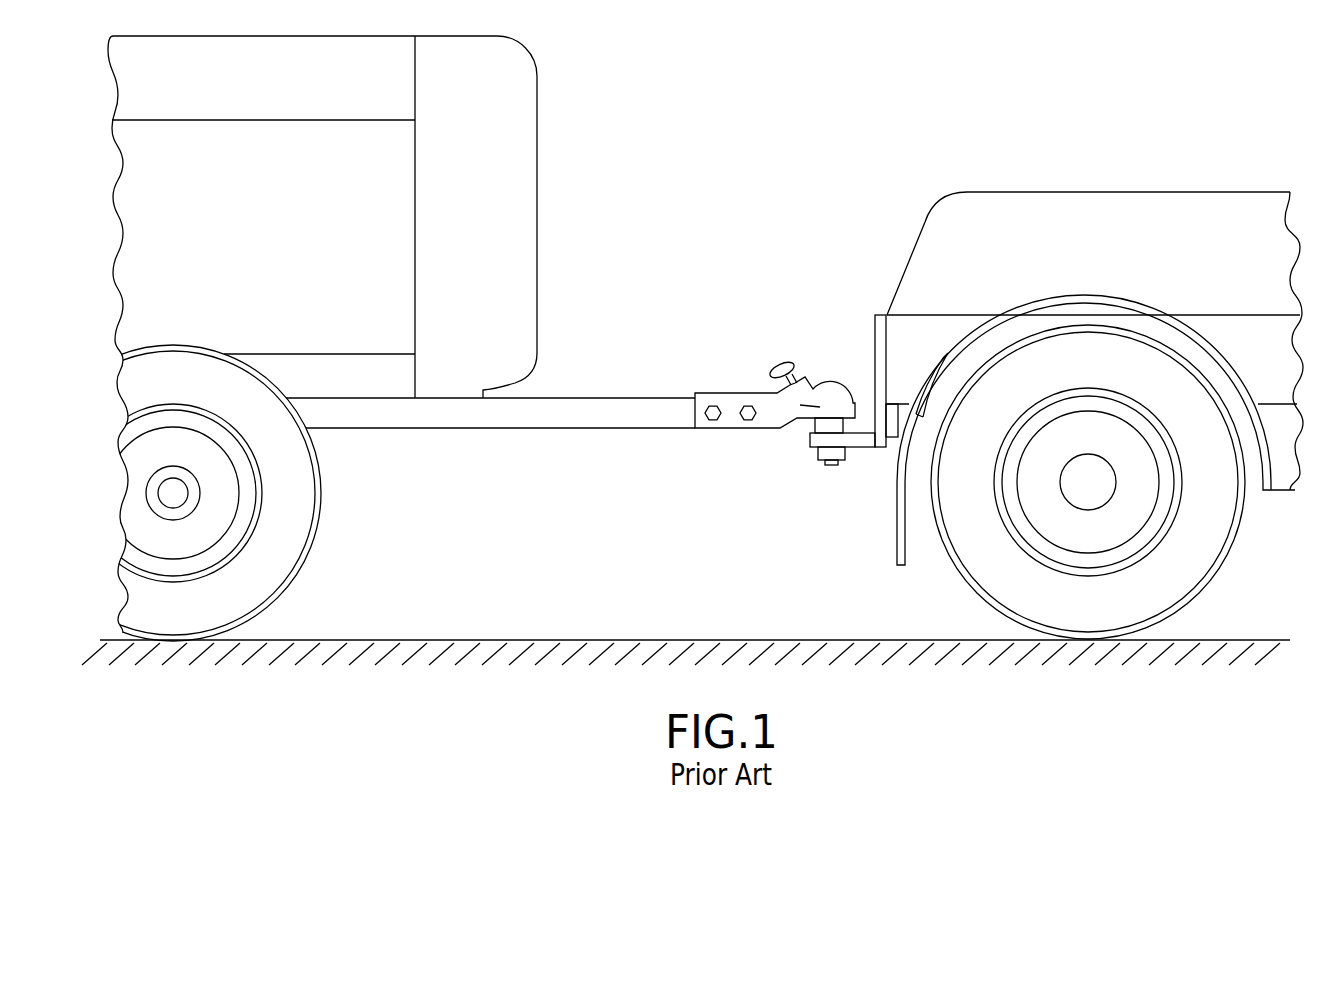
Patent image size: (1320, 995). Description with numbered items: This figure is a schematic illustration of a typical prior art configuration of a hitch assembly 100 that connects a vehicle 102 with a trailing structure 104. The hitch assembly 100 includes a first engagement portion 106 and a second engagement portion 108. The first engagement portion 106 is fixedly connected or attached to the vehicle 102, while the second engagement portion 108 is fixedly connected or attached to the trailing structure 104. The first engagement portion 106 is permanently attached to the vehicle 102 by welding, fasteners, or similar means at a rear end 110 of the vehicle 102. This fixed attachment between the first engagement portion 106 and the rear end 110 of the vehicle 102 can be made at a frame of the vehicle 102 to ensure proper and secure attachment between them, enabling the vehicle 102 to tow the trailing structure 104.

The hitch assembly 100 is at (808, 486).
The vehicle 102 is at (1054, 178).
The trailing structure 104 is at (552, 226).
The first engagement portion 106 is at (827, 421).
The second engagement portion 108 is at (815, 390).
The rear end 110 is at (864, 304).